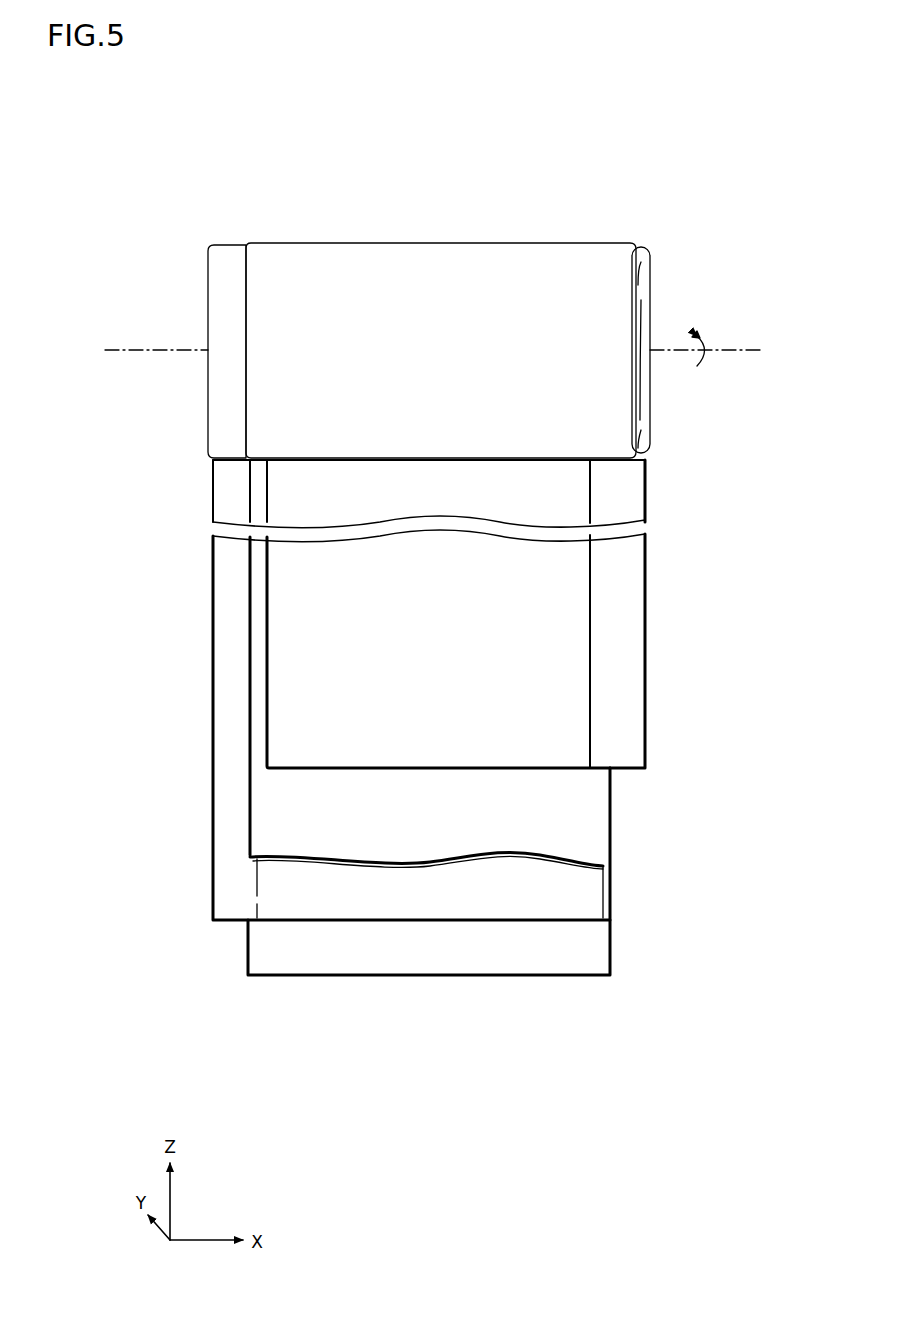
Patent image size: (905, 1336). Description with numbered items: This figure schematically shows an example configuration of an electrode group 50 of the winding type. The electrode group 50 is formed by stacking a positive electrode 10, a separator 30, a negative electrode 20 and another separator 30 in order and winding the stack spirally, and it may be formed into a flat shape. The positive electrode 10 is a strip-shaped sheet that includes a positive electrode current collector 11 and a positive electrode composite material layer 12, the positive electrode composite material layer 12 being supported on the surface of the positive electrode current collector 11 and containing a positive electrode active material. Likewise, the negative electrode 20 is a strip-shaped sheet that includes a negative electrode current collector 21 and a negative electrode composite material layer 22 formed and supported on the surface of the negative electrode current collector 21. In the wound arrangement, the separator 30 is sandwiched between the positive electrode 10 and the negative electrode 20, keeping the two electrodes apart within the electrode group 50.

The electrode group 50 is at (187, 191).
The positive electrode 10 is at (762, 545).
The positive electrode current collector 11 is at (630, 643).
The positive electrode composite material layer 12 is at (583, 591).
The negative electrode 20 is at (86, 767).
The negative electrode current collector 21 is at (213, 822).
The negative electrode composite material layer 22 is at (297, 900).
The separator 30 is at (607, 828).